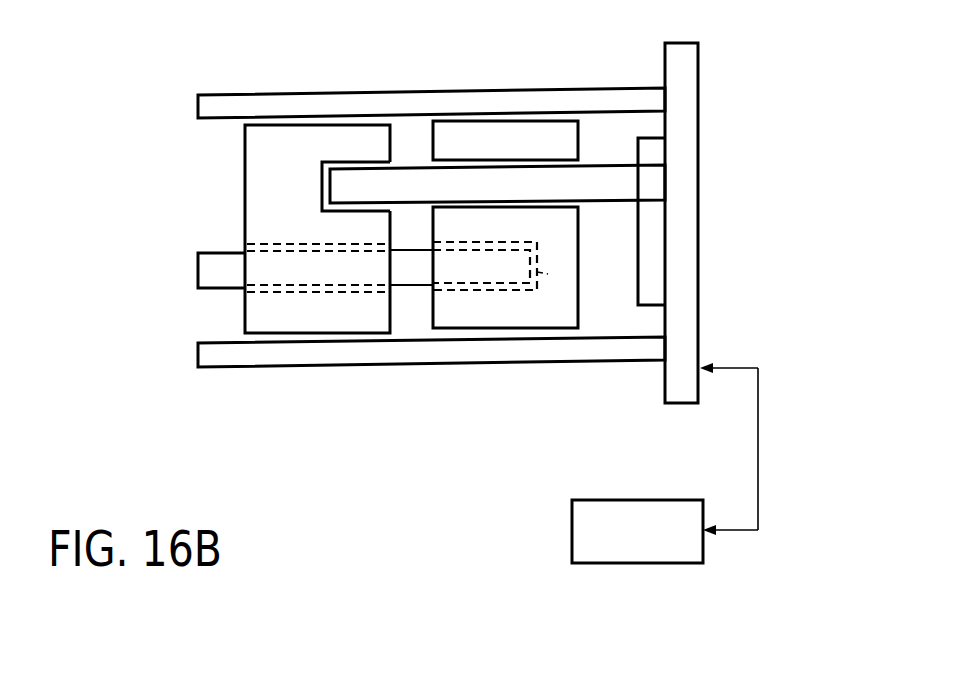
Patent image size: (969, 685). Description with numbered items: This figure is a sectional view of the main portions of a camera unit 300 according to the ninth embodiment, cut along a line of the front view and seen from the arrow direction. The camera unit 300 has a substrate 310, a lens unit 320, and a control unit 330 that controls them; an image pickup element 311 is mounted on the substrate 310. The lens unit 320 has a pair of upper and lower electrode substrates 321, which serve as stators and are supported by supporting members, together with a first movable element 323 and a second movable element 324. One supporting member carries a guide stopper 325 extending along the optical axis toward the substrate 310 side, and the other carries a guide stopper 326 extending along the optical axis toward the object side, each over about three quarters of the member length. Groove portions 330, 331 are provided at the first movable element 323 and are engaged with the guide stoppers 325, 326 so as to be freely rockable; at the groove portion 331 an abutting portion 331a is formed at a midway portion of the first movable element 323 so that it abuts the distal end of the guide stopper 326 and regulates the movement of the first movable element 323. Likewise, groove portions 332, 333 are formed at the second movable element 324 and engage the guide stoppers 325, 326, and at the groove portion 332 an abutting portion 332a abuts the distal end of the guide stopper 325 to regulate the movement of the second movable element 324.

The camera unit 300 is at (738, 230).
The substrate 310 is at (687, 405).
The image pickup element 311 is at (650, 272).
The lens unit 320 is at (527, 88).
The electrode substrate 321 is at (341, 100).
The first movable element 323 is at (258, 322).
The second movable element 324 is at (489, 313).
The guide stopper 325 is at (198, 265).
The guide stopper 326 is at (560, 162).
The control unit 330 is at (288, 243).
The groove portion 331 is at (347, 164).
The abutting portion 331a is at (322, 184).
The groove portion 332 is at (468, 240).
The abutting portion 332a is at (548, 274).
The groove portion 333 is at (453, 160).